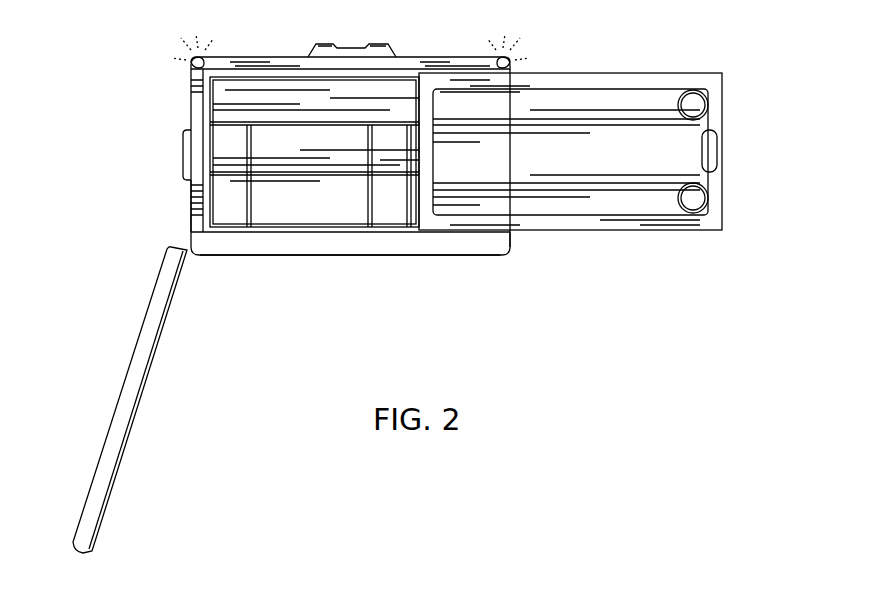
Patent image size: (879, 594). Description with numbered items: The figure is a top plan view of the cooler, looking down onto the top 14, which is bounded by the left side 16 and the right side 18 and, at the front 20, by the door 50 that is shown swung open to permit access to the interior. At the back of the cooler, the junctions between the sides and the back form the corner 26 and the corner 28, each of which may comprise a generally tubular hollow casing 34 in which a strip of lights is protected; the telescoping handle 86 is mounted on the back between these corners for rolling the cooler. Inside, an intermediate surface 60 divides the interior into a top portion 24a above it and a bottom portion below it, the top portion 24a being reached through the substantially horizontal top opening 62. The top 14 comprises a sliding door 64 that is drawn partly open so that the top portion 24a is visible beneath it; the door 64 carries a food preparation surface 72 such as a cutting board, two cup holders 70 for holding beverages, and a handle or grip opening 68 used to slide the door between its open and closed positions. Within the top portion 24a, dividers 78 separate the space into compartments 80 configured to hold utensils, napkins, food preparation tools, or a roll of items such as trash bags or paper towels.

The top 14 is at (188, 112).
The left side 16 is at (510, 244).
The right side 18 is at (191, 200).
The front 20 is at (342, 259).
The top portion 24a is at (336, 132).
The corner 26 is at (513, 50).
The corner 28 is at (194, 48).
The hollow casing 34 is at (190, 62).
The door 50 is at (147, 282).
The intermediate surface 60 is at (288, 153).
The top opening 62 is at (238, 218).
The door 64 is at (627, 73).
The handle or grip opening 68 is at (713, 160).
The cup holders 70 is at (708, 100).
The food preparation surface 72 is at (606, 205).
The divider 78 is at (237, 120).
The compartments 80 is at (378, 107).
The handle 86 is at (328, 47).